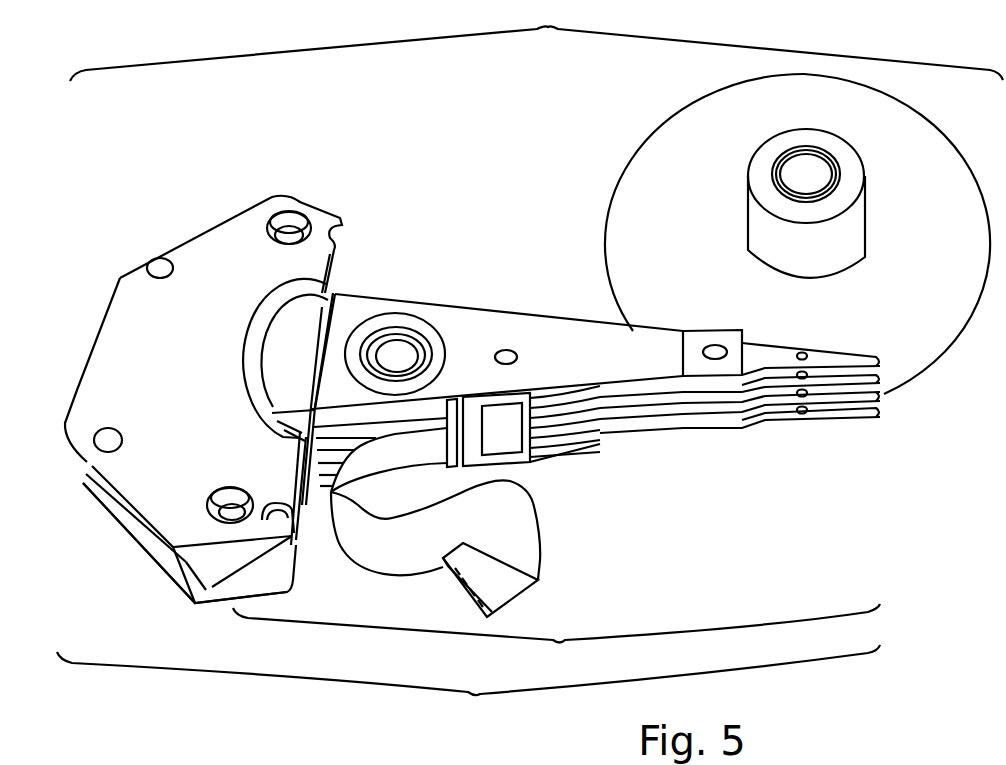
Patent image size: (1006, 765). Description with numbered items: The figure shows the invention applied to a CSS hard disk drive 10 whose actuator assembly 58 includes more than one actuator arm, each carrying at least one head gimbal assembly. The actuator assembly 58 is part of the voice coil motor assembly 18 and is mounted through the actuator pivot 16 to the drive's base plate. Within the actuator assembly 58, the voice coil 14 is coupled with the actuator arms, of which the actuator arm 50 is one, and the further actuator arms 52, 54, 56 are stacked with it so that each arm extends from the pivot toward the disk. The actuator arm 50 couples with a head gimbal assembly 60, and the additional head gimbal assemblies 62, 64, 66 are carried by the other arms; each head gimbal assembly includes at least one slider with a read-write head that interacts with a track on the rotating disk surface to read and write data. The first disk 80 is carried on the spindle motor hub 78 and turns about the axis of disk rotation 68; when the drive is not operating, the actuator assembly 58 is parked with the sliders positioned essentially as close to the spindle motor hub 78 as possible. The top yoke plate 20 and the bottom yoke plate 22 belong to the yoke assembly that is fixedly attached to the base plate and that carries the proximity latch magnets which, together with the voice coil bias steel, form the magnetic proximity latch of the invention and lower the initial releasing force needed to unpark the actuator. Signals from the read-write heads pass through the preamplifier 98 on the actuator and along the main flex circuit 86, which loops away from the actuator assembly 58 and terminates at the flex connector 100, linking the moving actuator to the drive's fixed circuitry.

The CSS hard disk drive 10 is at (536, 41).
The voice coil 14 is at (297, 410).
The actuator pivot 16 is at (397, 352).
The voice coil motor assembly 18 is at (468, 685).
The top yoke plate 20 is at (218, 250).
The bottom yoke plate 22 is at (178, 590).
The actuator arm 50 is at (615, 338).
The actuator arm 52 is at (683, 378).
The actuator arm 54 is at (672, 398).
The actuator arm 56 is at (626, 430).
The actuator assembly 58 is at (556, 636).
The head gimbal assembly 60 is at (848, 357).
The head gimbal assembly 62 is at (870, 375).
The head gimbal assembly 64 is at (875, 392).
The head gimbal assembly 66 is at (835, 412).
The axis of disk rotation 68 is at (812, 175).
The spindle motor hub 78 is at (852, 226).
The first disk 80 is at (922, 118).
The main flex circuit 86 is at (545, 550).
The preamplifier 98 is at (510, 405).
The flex connector 100 is at (495, 612).